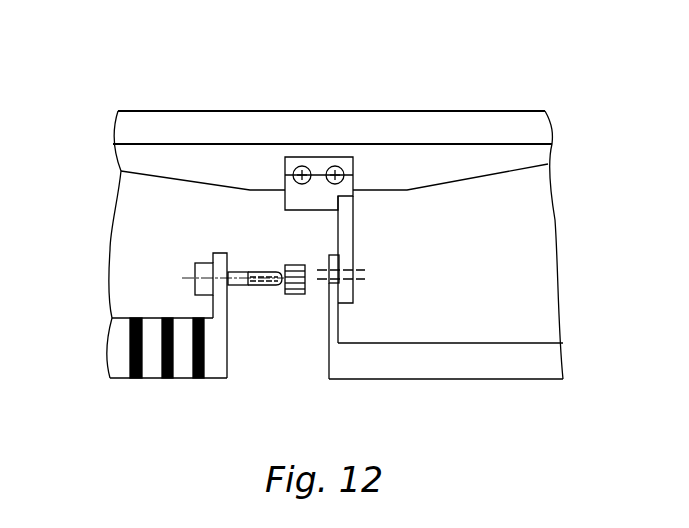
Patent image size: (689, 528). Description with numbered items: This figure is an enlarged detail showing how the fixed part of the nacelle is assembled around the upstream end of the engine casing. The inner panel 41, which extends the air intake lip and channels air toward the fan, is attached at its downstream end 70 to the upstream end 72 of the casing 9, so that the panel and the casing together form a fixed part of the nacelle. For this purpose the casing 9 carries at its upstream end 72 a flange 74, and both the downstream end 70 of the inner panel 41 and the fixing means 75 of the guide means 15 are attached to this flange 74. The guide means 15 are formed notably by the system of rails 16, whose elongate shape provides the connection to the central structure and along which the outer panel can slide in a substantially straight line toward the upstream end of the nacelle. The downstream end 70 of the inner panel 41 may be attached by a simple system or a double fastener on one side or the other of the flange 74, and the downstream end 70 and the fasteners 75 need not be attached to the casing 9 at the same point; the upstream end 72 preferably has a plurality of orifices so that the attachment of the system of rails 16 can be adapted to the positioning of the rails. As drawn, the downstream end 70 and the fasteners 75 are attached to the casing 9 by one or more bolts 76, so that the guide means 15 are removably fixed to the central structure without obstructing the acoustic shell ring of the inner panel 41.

The casing 9 is at (519, 357).
The guide means 15 is at (480, 108).
The system of rails 16 is at (394, 130).
The inner panel 41 is at (127, 382).
The downstream end 70 is at (183, 358).
The upstream end 72 is at (340, 362).
The flange 74 is at (333, 323).
The fixing means 75 is at (317, 165).
The bolts 76 is at (195, 283).